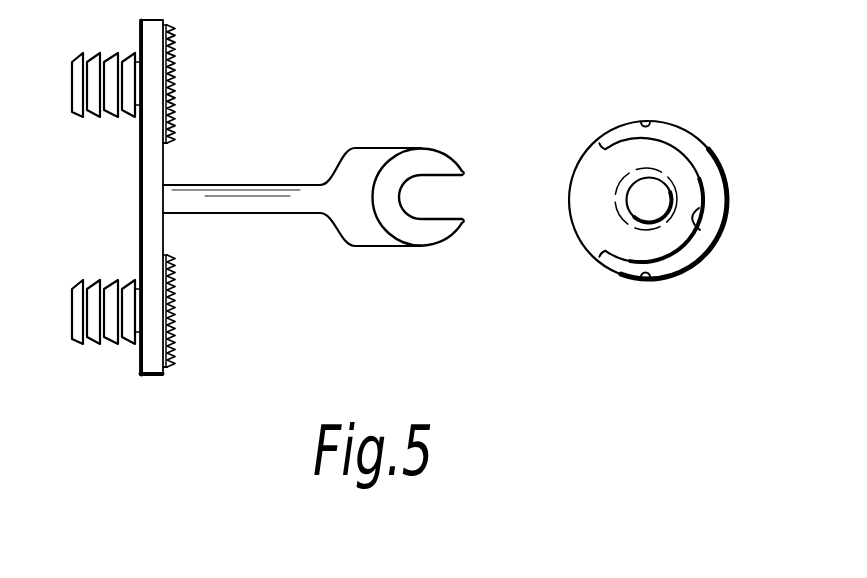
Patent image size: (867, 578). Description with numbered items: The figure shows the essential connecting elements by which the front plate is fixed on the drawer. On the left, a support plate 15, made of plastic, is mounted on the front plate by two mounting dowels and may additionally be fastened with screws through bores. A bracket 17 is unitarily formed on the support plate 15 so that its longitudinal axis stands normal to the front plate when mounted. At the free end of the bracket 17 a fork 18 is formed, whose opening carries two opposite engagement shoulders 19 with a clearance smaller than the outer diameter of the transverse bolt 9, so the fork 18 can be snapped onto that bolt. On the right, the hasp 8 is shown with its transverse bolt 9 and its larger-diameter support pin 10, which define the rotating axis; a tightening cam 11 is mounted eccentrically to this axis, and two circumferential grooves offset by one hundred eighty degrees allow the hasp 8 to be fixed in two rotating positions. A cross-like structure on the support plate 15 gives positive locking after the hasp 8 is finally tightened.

The hasp 8 is at (692, 142).
The transverse bolt 9 is at (641, 205).
The support pin 10 is at (627, 173).
The tightening cam 11 is at (695, 230).
The support plate 15 is at (152, 167).
The bracket 17 is at (272, 183).
The fork 18 is at (417, 158).
The engagement shoulders 19 is at (462, 218).